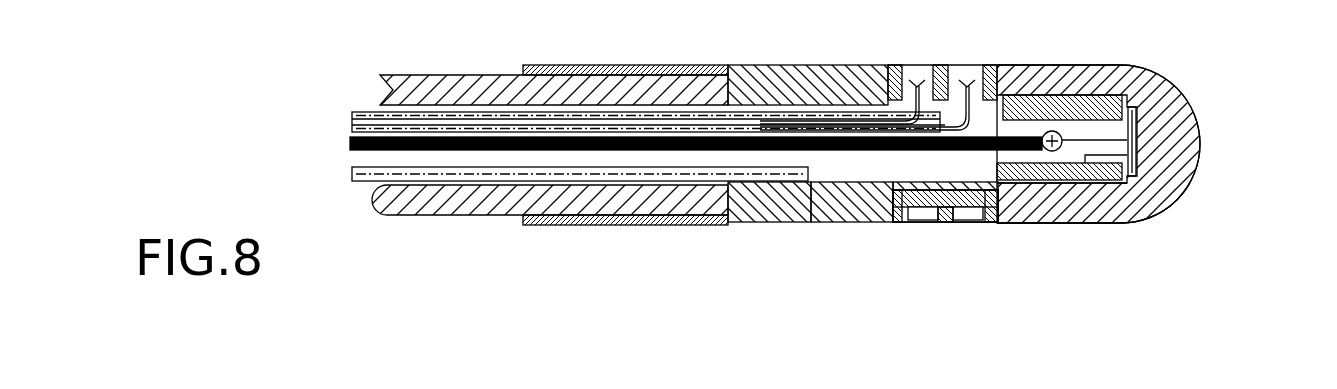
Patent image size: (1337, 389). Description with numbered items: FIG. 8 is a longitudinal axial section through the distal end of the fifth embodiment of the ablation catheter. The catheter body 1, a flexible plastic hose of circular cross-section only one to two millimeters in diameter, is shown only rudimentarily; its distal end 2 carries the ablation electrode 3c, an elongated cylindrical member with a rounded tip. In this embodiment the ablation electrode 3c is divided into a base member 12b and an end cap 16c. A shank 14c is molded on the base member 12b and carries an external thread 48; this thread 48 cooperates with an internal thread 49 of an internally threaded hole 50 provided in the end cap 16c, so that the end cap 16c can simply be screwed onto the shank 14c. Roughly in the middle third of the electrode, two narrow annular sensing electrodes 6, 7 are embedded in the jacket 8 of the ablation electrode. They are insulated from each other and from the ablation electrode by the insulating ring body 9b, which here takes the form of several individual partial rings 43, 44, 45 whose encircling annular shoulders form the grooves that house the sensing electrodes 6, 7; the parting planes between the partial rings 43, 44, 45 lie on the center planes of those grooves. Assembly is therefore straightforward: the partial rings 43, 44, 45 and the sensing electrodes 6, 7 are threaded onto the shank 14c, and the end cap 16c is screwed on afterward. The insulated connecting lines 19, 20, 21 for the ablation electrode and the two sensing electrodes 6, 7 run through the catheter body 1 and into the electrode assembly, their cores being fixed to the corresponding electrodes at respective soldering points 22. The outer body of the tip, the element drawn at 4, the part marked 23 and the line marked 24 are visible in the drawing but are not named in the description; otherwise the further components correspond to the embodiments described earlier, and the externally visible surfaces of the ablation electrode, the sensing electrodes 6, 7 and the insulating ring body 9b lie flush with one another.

The catheter body 1 is at (387, 215).
The distal end 2 is at (606, 200).
The ablation electrode 3c is at (1134, 57).
The tip housing 4 is at (1201, 123).
The sensing electrode 6 is at (987, 222).
The sensing electrode 7 is at (920, 220).
The jacket 8 is at (808, 222).
The insulating ring body 9b is at (945, 236).
The base member 12b is at (765, 222).
The shank 14c is at (1017, 65).
The end cap 16c is at (1182, 193).
The connecting line 19 is at (478, 181).
The connecting line 20 is at (432, 128).
The connecting line 21 is at (483, 125).
The soldering point 22 is at (962, 72).
The spacer 23 is at (1080, 65).
The wire 24 is at (352, 146).
The partial ring 43 is at (877, 222).
The partial ring 44 is at (967, 222).
The partial ring 45 is at (1028, 222).
The external thread 48 is at (1137, 153).
The internal thread 49 is at (1090, 160).
The internally threaded hole 50 is at (1120, 186).